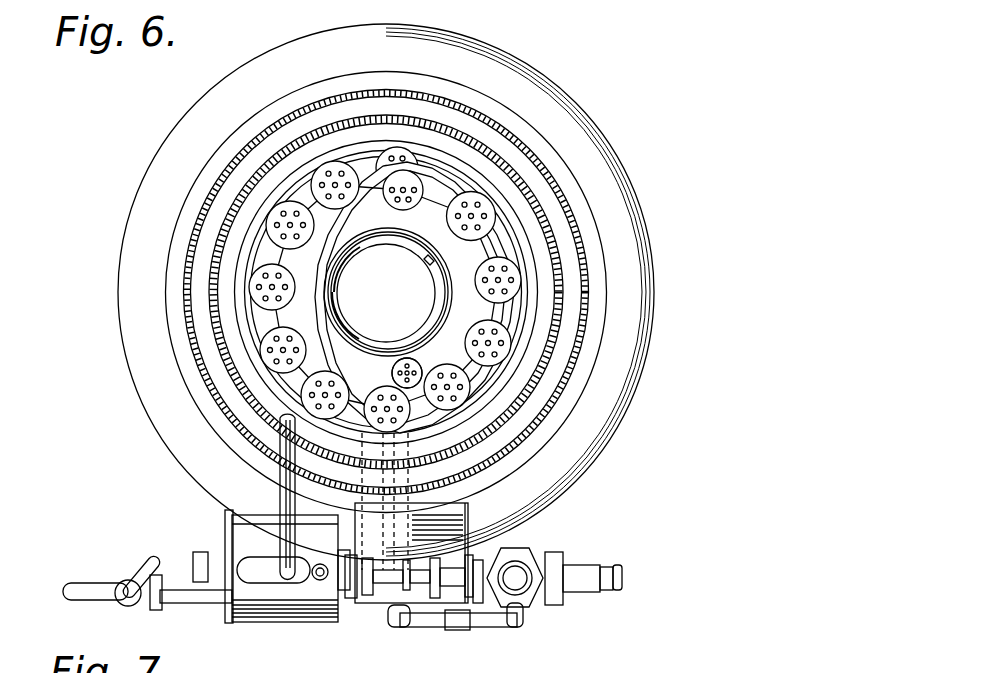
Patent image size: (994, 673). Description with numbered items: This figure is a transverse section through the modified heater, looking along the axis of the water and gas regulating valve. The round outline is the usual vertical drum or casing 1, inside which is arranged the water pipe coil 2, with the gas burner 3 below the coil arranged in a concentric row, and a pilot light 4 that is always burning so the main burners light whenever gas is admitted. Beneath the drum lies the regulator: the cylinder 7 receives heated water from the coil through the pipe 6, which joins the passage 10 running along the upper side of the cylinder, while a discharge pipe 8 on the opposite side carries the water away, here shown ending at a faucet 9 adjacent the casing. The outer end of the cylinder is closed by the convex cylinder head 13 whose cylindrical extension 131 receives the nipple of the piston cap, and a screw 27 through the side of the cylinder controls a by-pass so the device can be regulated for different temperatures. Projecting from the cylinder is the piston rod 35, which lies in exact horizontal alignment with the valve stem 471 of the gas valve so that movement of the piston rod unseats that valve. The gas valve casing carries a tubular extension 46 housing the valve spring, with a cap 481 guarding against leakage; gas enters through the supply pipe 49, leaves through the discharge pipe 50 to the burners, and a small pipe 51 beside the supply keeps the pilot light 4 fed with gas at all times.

The casing 1 is at (574, 372).
The water pipe coil 2 is at (431, 306).
The gas burner 3 is at (481, 286).
The pilot light 4 is at (396, 368).
The pipe 6 is at (282, 498).
The cylinder 7 is at (321, 611).
The discharge pipe 8 is at (165, 605).
The faucet 9 is at (128, 606).
The passage 10 is at (263, 620).
The cylinder head 13 is at (213, 598).
The cylindrical extension 131 is at (205, 552).
The screw 27 is at (303, 576).
The piston rod 35 is at (392, 580).
The tubular extension 46 is at (582, 569).
The valve stem 471 is at (426, 571).
The cap 481 is at (623, 577).
The gas supply pipe 49 is at (414, 559).
The gas discharge pipe 50 is at (528, 575).
The small pipe 51 is at (478, 622).